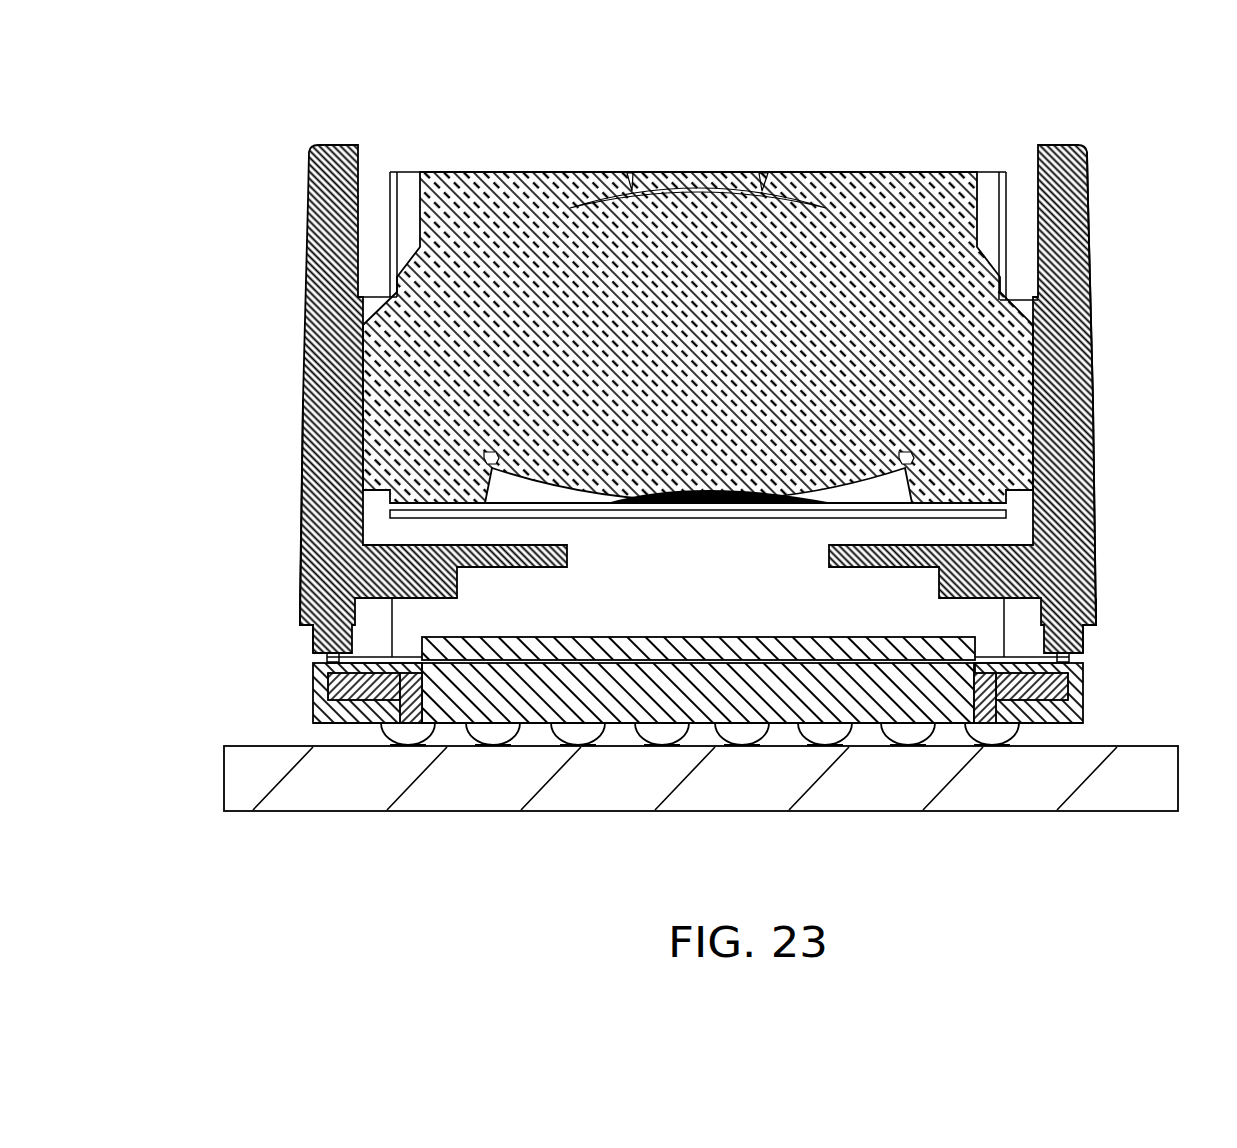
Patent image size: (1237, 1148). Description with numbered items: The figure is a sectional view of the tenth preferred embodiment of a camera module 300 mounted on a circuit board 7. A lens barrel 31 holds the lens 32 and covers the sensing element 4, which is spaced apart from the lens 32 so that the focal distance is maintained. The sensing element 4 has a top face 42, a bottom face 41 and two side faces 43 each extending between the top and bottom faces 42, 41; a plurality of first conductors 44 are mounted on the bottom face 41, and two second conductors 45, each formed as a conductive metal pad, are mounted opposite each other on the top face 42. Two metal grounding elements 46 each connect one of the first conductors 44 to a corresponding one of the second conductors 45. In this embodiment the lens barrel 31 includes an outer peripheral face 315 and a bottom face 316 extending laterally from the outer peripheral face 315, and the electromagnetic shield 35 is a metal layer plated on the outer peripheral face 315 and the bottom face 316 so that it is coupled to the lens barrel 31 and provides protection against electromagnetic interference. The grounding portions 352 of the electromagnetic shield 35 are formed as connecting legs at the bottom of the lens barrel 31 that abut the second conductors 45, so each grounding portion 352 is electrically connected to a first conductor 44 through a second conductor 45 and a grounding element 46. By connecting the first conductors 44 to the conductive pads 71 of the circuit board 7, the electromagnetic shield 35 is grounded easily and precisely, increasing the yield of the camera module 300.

The camera module 300 is at (882, 163).
The lens barrel 31 is at (1062, 466).
The lens 32 is at (885, 378).
The electromagnetic shield 35 is at (1092, 508).
The outer peripheral face 315 is at (307, 500).
The bottom face 316 is at (305, 606).
The grounding portions 352 is at (327, 658).
The second conductors 45 is at (323, 660).
The top face 42 is at (1085, 668).
The side faces 43 is at (1087, 700).
The first conductors 44 is at (413, 732).
The grounding elements 46 is at (362, 727).
The bottom face 41 is at (613, 730).
The sensing element 4 is at (747, 700).
The conductive pads 71 is at (490, 728).
The circuit board 7 is at (256, 775).